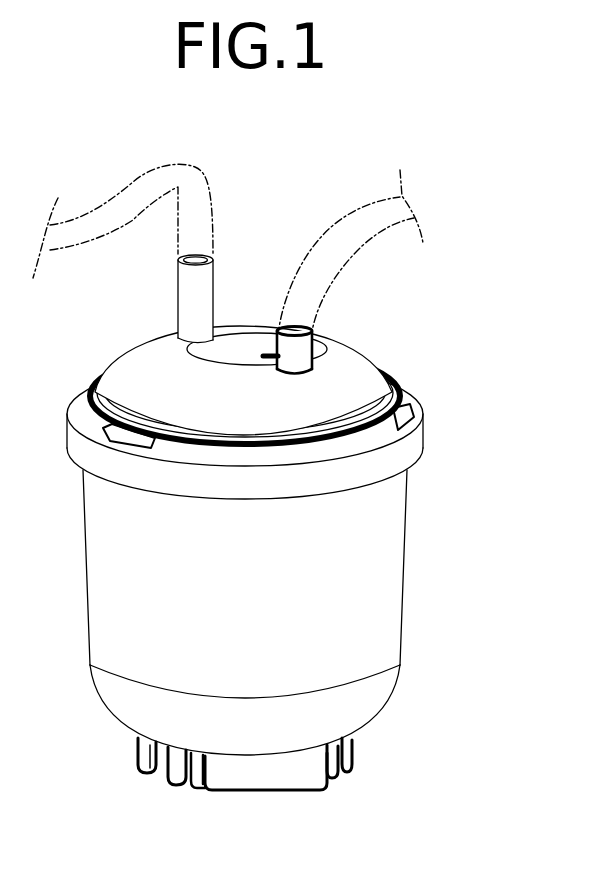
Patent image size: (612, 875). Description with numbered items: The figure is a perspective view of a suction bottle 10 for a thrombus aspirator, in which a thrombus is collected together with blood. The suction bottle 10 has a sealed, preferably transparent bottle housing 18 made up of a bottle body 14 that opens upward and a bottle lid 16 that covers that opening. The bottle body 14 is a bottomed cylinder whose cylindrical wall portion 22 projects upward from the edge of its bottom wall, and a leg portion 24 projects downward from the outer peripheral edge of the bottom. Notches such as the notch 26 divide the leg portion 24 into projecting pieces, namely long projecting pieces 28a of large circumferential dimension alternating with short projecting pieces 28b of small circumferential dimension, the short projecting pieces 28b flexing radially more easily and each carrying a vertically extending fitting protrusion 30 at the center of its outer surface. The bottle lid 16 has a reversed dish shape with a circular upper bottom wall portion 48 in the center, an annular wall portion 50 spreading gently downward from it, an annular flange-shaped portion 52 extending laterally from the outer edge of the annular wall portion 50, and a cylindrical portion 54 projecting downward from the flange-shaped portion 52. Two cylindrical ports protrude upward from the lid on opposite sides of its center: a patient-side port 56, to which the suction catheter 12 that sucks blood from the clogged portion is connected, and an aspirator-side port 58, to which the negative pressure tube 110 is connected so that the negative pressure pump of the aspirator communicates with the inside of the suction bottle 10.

The suction bottle 10 is at (465, 323).
The suction catheter 12 is at (109, 205).
The bottle body 14 is at (408, 518).
The bottle lid 16 is at (425, 425).
The bottle housing 18 is at (497, 453).
The cylindrical wall portion 22 is at (118, 592).
The leg portion 24 is at (233, 804).
The notch 26 is at (194, 774).
The long projecting piece 28a is at (262, 772).
The short projecting piece 28b is at (162, 772).
The fitting protrusion 30 is at (177, 769).
The upper bottom wall portion 48 is at (237, 348).
The annular wall portion 50 is at (150, 375).
The flange-shaped portion 52 is at (92, 396).
The cylindrical portion 54 is at (78, 456).
The patient-side port 56 is at (190, 300).
The aspirator-side port 58 is at (300, 353).
The negative pressure tube 110 is at (330, 250).